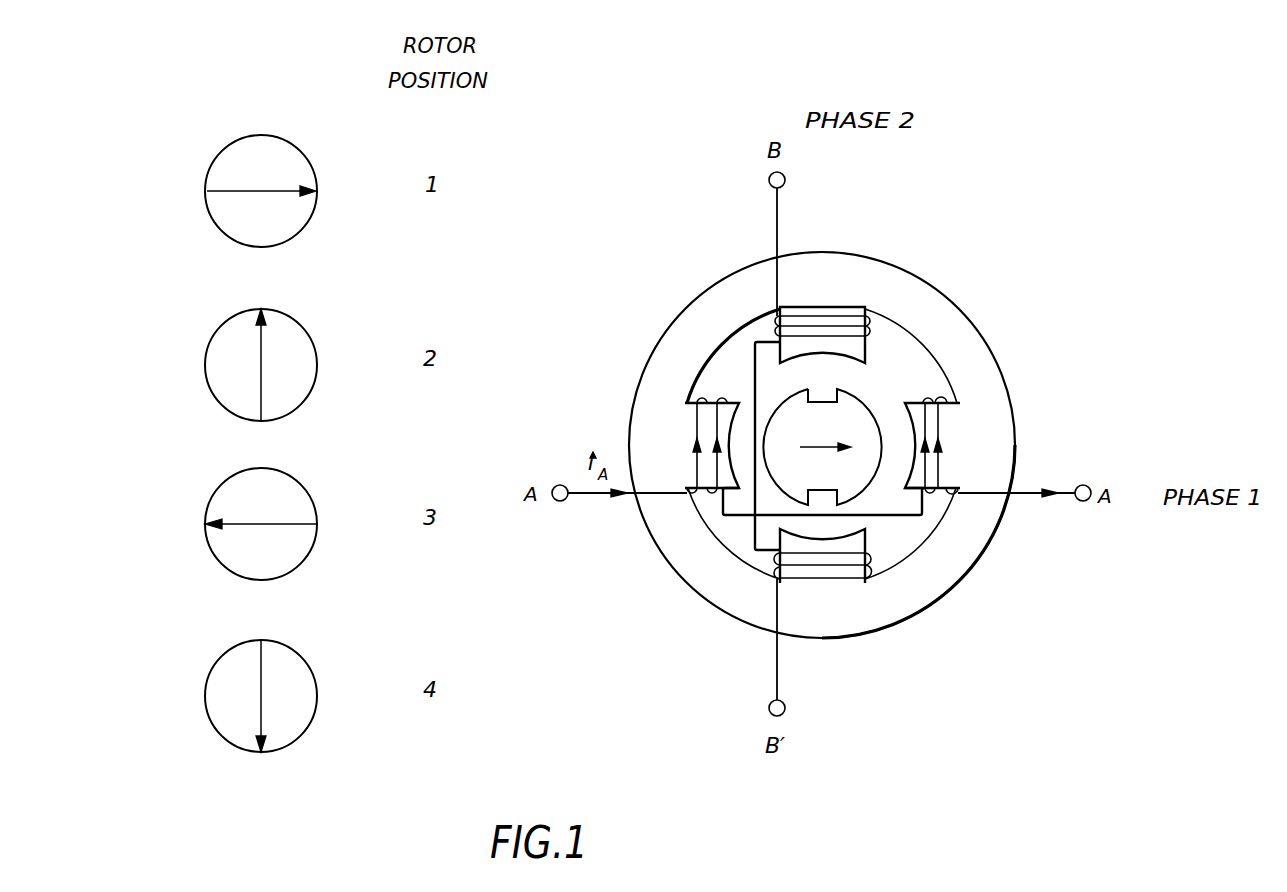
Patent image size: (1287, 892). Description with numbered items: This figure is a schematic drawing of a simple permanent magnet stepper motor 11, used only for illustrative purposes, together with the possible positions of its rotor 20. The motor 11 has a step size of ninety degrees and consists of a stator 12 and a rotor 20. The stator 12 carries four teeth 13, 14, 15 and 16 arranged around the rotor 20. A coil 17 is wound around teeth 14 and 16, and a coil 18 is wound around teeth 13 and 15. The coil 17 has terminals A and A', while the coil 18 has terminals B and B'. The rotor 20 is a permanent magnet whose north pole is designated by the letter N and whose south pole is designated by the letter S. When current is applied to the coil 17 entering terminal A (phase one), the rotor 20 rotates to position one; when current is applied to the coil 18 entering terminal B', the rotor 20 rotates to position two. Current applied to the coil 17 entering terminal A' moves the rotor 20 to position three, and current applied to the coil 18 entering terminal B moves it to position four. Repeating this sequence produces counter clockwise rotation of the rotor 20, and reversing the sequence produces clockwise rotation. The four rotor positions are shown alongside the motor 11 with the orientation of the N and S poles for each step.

The permanent magnet stepper motor 11 is at (1060, 360).
The stator 12 is at (955, 568).
The tooth 13 is at (850, 582).
The tooth 14 is at (687, 414).
The tooth 15 is at (866, 352).
The tooth 16 is at (953, 413).
The coil 17 is at (604, 495).
The coil 18 is at (777, 675).
The rotor 20 is at (213, 163).